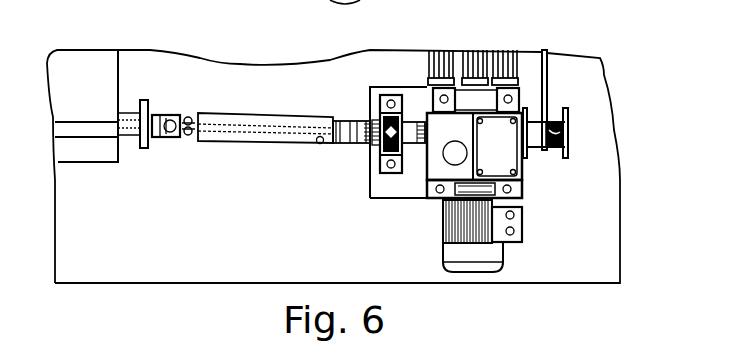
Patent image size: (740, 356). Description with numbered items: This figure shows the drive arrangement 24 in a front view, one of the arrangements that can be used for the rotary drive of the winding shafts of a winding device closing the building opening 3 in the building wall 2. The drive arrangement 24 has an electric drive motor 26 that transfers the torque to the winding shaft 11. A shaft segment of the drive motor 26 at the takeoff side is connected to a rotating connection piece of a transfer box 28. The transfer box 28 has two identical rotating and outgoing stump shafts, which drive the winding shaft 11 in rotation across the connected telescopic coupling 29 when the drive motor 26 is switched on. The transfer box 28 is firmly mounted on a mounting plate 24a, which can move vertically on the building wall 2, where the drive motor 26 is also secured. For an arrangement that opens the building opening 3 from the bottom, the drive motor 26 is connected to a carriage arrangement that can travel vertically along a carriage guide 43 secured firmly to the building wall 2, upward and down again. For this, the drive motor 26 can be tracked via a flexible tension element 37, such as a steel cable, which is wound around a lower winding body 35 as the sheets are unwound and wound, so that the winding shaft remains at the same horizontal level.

The building wall 2 is at (259, 251).
The building opening 3 is at (107, 157).
The winding shaft 11 is at (128, 132).
The drive arrangement 24 is at (237, 63).
The mounting plate 24a is at (368, 187).
The drive motor 26 is at (437, 247).
The transfer box 28 is at (370, 158).
The telescopic coupling 29 is at (260, 147).
The lower winding body 35 is at (531, 148).
The tension element 37 is at (548, 77).
The carriage guide 43 is at (430, 63).